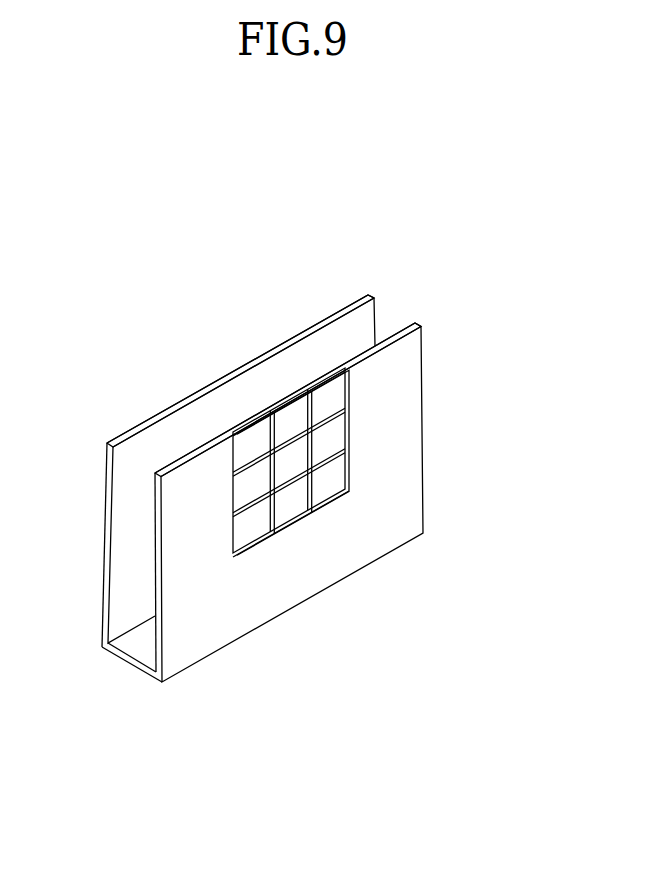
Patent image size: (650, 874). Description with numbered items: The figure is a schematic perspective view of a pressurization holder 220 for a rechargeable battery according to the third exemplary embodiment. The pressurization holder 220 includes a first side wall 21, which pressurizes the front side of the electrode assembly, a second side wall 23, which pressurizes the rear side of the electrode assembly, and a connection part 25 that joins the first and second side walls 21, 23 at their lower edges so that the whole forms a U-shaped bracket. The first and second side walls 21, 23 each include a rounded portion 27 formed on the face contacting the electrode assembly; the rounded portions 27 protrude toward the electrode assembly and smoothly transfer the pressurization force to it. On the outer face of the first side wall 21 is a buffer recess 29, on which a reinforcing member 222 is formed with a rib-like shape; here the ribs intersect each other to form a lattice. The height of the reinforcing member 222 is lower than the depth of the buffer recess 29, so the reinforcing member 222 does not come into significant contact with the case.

The pressurization holder 220 is at (452, 300).
The first side wall 21 is at (163, 643).
The second side wall 23 is at (103, 621).
The connection part 25 is at (127, 663).
The rounded portion 27 is at (242, 375).
The reinforcing member 222 is at (292, 492).
The buffer recess 29 is at (328, 490).